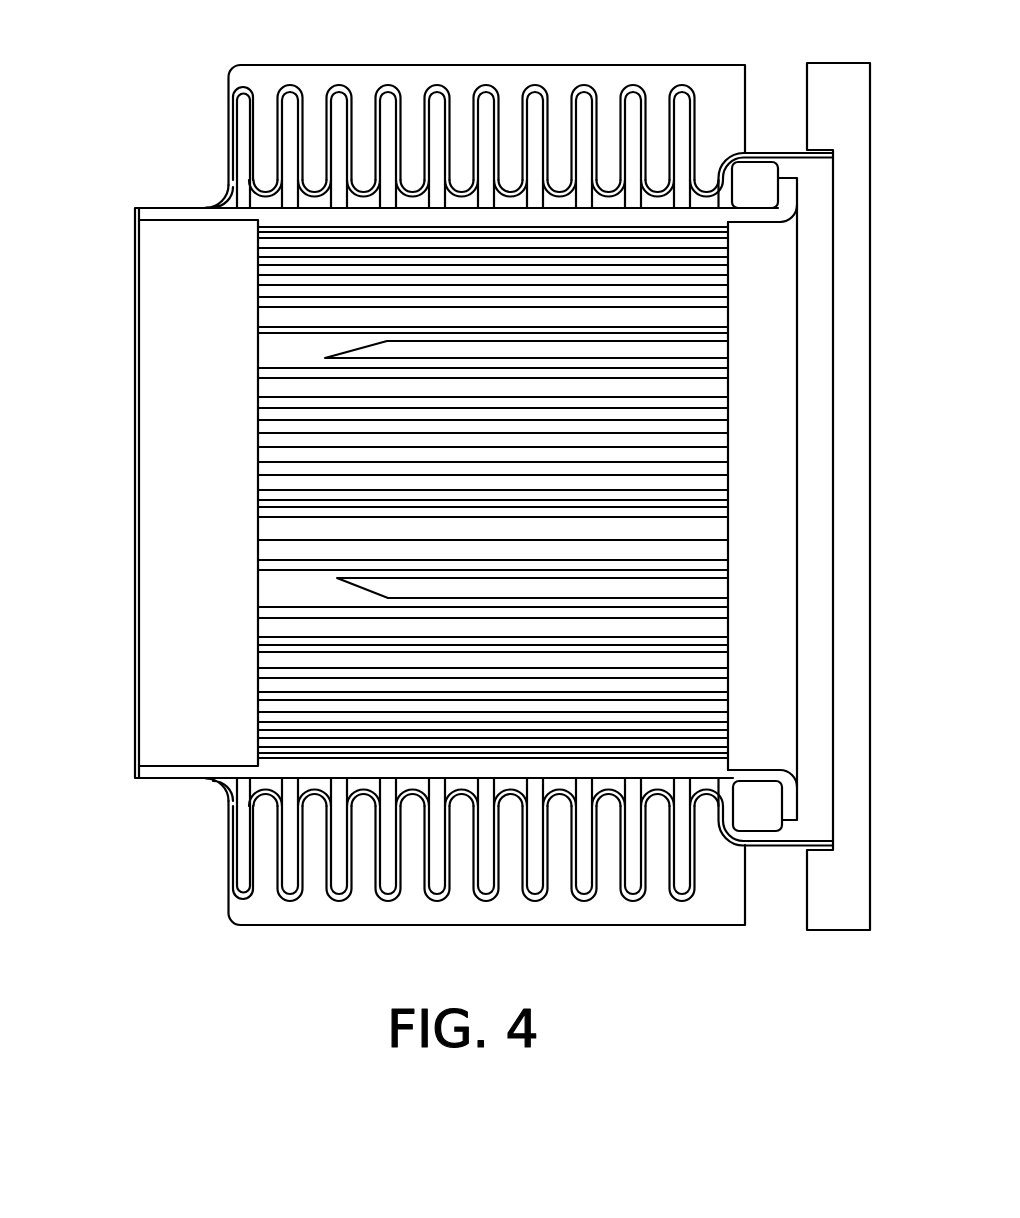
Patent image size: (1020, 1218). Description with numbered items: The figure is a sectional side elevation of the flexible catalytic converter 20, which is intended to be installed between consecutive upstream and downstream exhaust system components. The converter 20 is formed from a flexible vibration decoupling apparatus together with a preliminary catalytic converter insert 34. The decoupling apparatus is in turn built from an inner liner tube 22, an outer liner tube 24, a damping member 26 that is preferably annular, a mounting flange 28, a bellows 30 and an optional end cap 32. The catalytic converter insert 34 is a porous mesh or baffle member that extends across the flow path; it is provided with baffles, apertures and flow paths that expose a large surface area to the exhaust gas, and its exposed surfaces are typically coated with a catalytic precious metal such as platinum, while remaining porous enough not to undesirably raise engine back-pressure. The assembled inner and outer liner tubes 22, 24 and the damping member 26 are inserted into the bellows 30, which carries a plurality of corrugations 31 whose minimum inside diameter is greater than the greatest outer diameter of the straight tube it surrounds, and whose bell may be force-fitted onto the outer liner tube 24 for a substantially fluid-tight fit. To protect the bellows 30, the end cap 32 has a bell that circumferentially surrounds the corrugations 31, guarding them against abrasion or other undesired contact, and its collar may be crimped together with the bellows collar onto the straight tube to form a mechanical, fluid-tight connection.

The flexible catalytic converter 20 is at (92, 91).
The inner liner tube 22 is at (150, 212).
The outer liner tube 24 is at (800, 157).
The damping member 26 is at (758, 172).
The mounting flange 28 is at (852, 82).
The bellows 30 is at (345, 65).
The corrugations 31 is at (434, 90).
The end cap 32 is at (556, 50).
The catalytic converter insert 34 is at (295, 355).